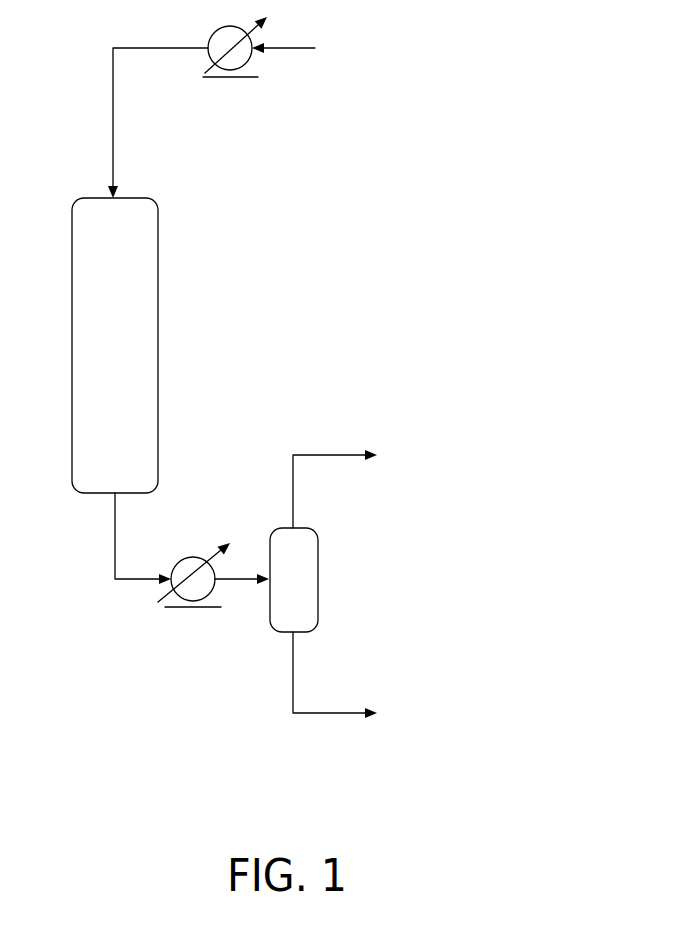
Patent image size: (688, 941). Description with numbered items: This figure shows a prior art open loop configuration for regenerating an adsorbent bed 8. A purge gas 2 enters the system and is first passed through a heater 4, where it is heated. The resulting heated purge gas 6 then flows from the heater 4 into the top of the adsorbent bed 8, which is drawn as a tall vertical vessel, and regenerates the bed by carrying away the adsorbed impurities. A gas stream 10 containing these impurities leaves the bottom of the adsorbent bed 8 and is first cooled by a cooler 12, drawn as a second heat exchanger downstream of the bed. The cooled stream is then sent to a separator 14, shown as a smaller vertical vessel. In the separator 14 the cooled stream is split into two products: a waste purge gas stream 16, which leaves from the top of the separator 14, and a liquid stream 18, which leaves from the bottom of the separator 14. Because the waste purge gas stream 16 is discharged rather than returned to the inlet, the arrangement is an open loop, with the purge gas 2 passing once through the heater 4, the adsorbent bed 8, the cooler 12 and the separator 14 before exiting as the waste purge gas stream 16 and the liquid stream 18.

The purge gas 2 is at (305, 50).
The heater 4 is at (232, 72).
The heated purge gas 6 is at (118, 160).
The adsorbent bed 8 is at (123, 361).
The gas stream containing impurities 10 is at (115, 537).
The cooler 12 is at (193, 557).
The separator 14 is at (281, 591).
The waste purge gas stream 16 is at (293, 483).
The liquid stream 18 is at (293, 667).